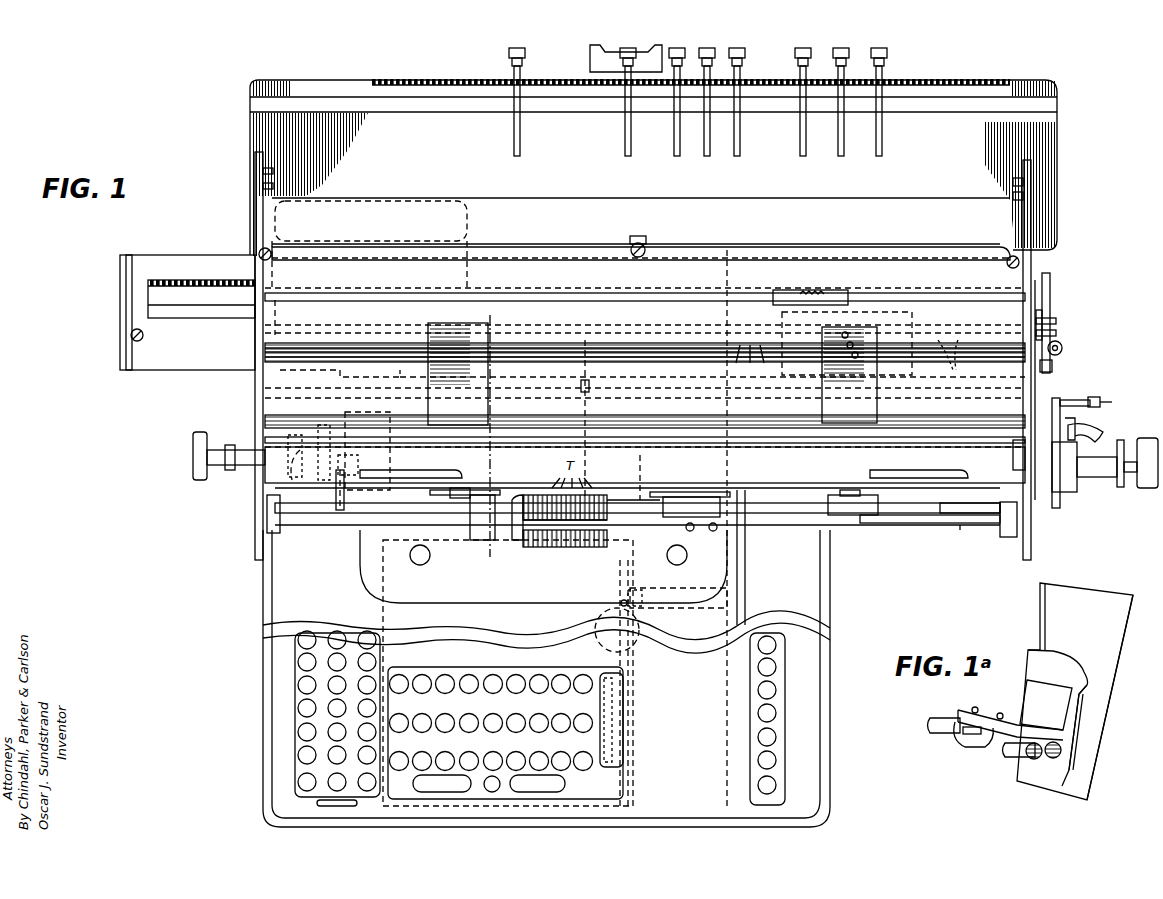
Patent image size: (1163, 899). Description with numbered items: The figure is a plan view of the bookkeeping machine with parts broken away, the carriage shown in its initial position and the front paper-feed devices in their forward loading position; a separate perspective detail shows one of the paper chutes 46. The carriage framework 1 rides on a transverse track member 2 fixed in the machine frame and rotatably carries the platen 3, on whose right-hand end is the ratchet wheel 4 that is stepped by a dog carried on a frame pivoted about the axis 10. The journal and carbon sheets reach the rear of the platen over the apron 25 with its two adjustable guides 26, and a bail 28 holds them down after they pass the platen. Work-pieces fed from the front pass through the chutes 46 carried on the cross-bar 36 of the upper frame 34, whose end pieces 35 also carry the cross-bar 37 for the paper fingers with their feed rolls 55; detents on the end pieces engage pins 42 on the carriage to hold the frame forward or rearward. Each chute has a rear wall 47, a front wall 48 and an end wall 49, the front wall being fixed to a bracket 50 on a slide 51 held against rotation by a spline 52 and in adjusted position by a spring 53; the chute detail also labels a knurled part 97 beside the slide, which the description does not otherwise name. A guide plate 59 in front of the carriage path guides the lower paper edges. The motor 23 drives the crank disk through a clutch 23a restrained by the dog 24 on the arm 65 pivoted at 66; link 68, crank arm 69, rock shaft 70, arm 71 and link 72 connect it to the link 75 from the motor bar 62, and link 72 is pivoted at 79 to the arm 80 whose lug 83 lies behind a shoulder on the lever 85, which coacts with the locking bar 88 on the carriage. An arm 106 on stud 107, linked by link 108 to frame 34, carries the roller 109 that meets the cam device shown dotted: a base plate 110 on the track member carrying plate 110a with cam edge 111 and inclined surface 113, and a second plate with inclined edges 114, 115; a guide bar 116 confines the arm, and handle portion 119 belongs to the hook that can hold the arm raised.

In FIG. 1, the carriage framework 1 is at (255, 382).
In FIG. 1, the track member 2 is at (213, 365).
In FIG. 1, the platen 3 is at (686, 432).
In FIG. 1, the ratchet wheel 4 is at (1058, 490).
In FIG. 1, the axis 10 is at (455, 316).
In FIG. 1, the electric motor 23 is at (467, 235).
In FIG. 1, the clutch 23a is at (330, 425).
In FIG. 1, the dog 24 is at (298, 474).
In FIG. 1, the apron 25 is at (312, 355).
In FIG. 1, the guides 26 is at (490, 340).
In FIG. 1, the bail 28 is at (905, 455).
In FIG. 1, the upper frame 34 is at (990, 545).
In FIG. 1, the end pieces 35 is at (265, 530).
In FIG. 1, the cross-bar 36 is at (948, 525).
In FIG. 1A, the cross-bar 36 is at (1008, 750).
In FIG. 1, the cross-bar 37 is at (960, 515).
In FIG. 1, the pin 42 is at (258, 443).
In FIG. 1, the paper chutes 46 is at (502, 490).
In FIG. 1A, the paper chutes 46 is at (1112, 697).
In FIG. 1A, the rear wall 47 is at (1105, 592).
In FIG. 1A, the front wall 48 is at (1090, 690).
In FIG. 1A, the end wall 49 is at (1044, 616).
In FIG. 1A, the bracket 50 is at (1030, 695).
In FIG. 1A, the slide 51 is at (958, 735).
In FIG. 1A, the spline 52 is at (975, 742).
In FIG. 1A, the spring 53 is at (968, 745).
In FIG. 1, the feed rolls 55 is at (455, 488).
In FIG. 1, the guide plate 59 is at (400, 482).
In FIG. 1, the motor bar 62 is at (604, 680).
In FIG. 1, the arm 65 is at (346, 490).
In FIG. 1, the pivot 66 is at (352, 462).
In FIG. 1, the link 68 is at (385, 612).
In FIG. 1, the crank arm 69 is at (431, 783).
In FIG. 1, the rock shaft 70 is at (568, 790).
In FIG. 1, the arm 71 is at (626, 812).
In FIG. 1, the link 72 is at (632, 642).
In FIG. 1, the link 75 is at (620, 565).
In FIG. 1, the pivot 79 is at (622, 600).
In FIG. 1, the arm 80 is at (680, 588).
In FIG. 1, the angular upper end 83 is at (640, 590).
In FIG. 1, the lever 85 is at (645, 462).
In FIG. 1, the locking bar 88 is at (1087, 397).
In FIG. 1A, the knurled nuts 97 is at (1056, 758).
In FIG. 1, the arm 106 is at (1056, 322).
In FIG. 1, the stud 107 is at (1056, 334).
In FIG. 1, the link 108 is at (1052, 372).
In FIG. 1, the roller 109 is at (1062, 348).
In FIG. 1, the base plate 110 is at (784, 338).
In FIG. 1, the plate 110a is at (958, 385).
In FIG. 1, the cam edge 111 is at (830, 330).
In FIG. 1, the inclined surface 113 is at (930, 330).
In FIG. 1, the inclined edge 114 is at (840, 350).
In FIG. 1, the inclined edge 115 is at (835, 340).
In FIG. 1, the guide bar 116 is at (1050, 298).
In FIG. 1, the handle portion 119 is at (1045, 313).